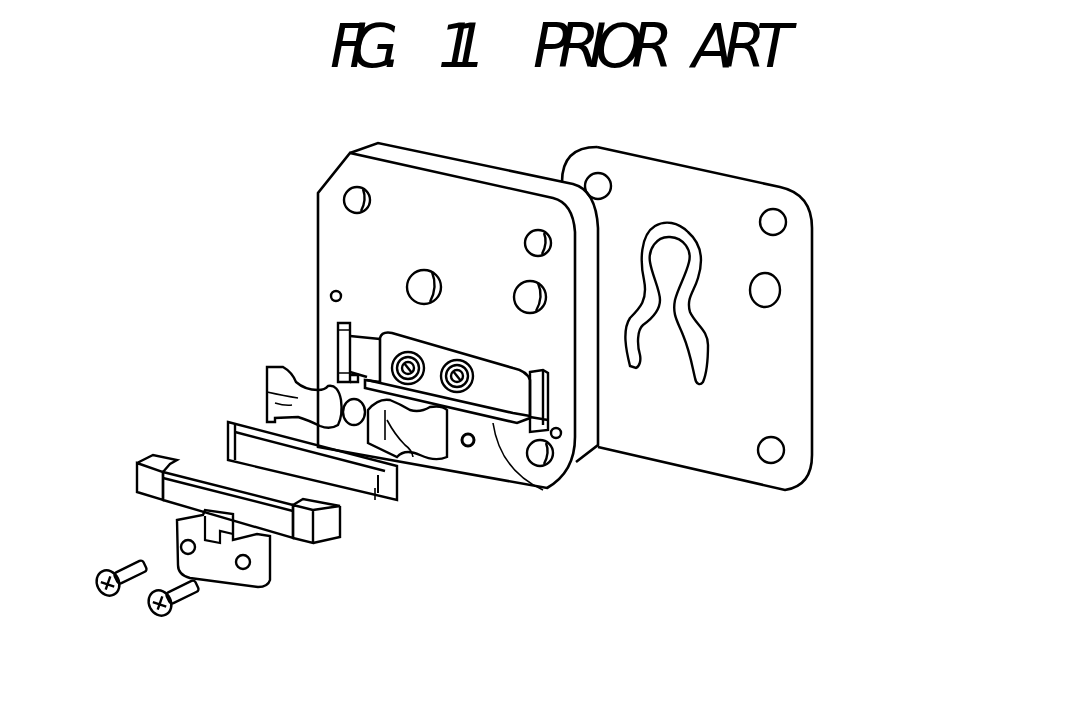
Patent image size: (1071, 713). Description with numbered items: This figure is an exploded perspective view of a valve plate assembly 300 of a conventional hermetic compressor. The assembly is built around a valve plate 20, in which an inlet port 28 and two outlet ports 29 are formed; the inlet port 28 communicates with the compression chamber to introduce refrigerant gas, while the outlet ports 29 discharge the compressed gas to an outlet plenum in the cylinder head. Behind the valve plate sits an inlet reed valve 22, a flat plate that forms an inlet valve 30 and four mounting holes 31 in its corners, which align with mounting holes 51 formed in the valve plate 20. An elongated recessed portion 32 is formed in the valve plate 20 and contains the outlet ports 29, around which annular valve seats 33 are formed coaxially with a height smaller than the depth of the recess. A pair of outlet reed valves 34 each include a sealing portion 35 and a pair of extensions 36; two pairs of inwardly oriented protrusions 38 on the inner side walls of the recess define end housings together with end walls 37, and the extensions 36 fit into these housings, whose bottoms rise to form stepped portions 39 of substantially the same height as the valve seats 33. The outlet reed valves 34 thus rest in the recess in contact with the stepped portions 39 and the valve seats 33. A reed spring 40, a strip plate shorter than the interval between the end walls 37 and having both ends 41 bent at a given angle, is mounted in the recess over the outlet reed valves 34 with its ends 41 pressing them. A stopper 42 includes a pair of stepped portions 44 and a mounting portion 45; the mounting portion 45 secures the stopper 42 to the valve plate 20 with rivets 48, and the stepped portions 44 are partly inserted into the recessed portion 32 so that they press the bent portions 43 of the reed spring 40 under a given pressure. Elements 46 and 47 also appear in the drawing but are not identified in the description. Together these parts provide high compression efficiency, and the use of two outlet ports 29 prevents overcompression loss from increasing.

The valve plate 20 is at (473, 181).
The inlet reed valve 22 is at (700, 170).
The inlet port 28 is at (424, 272).
The outlet ports 29 is at (420, 357).
The inlet valve 30 is at (668, 250).
The mounting holes 31 is at (598, 173).
The recessed portion 32 is at (518, 420).
The valve seats 33 is at (405, 352).
The outlet reed valves 34 is at (268, 382).
The sealing portion 35 is at (297, 402).
The extensions 36 is at (266, 370).
The end walls 37 is at (312, 370).
The protrusions 38 is at (358, 328).
The stepped portion 39 is at (338, 325).
The reed spring 40 is at (353, 485).
The ends 41 is at (228, 428).
The stopper 42 is at (180, 497).
The bent portions 43 is at (222, 446).
The stepped portions 44 is at (146, 458).
The mounting portion 45 is at (227, 566).
The tab 46 is at (177, 547).
The hole 47 is at (490, 425).
The rivets 48 is at (152, 612).
The mounting holes 51 is at (344, 193).
The valve plate assembly 300 is at (553, 568).